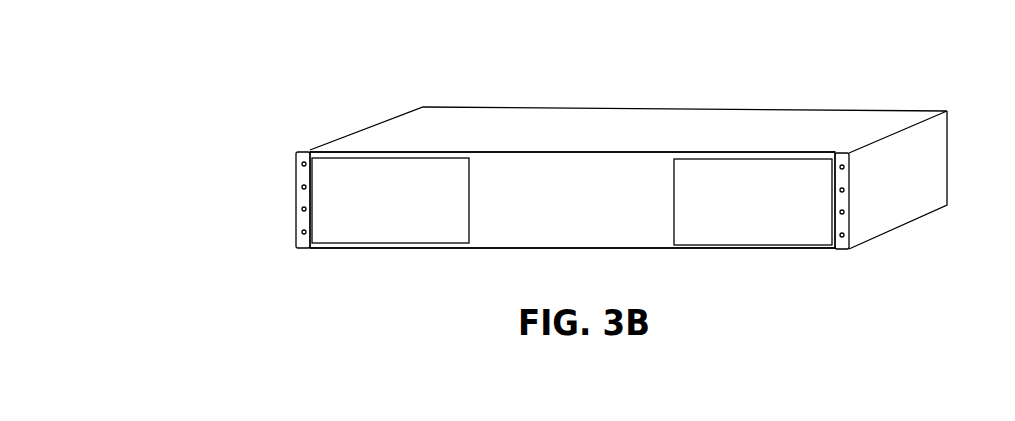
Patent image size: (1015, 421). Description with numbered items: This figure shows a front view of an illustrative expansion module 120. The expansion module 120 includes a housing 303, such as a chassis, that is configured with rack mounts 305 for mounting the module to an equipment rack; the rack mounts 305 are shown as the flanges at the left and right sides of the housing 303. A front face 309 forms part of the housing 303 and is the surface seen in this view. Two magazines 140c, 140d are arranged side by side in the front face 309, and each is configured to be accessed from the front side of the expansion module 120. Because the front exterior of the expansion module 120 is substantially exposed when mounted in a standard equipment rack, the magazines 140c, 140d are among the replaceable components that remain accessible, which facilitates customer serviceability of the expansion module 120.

The expansion module 120 is at (878, 66).
The housing 303 is at (391, 119).
The rack mounts 305 is at (296, 186).
The front face 309 is at (610, 181).
The magazine 140c is at (390, 200).
The magazine 140d is at (753, 202).